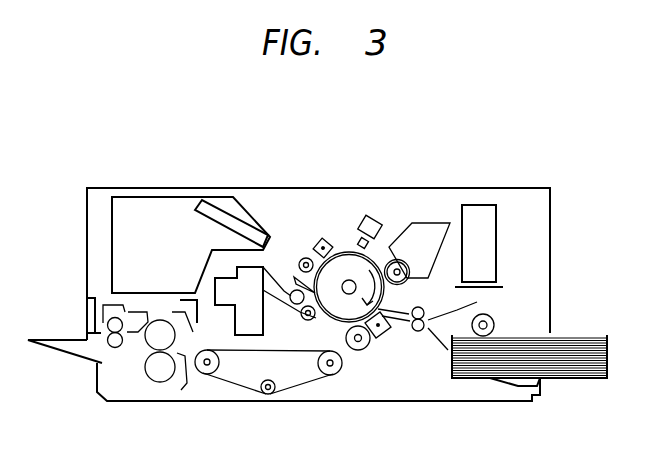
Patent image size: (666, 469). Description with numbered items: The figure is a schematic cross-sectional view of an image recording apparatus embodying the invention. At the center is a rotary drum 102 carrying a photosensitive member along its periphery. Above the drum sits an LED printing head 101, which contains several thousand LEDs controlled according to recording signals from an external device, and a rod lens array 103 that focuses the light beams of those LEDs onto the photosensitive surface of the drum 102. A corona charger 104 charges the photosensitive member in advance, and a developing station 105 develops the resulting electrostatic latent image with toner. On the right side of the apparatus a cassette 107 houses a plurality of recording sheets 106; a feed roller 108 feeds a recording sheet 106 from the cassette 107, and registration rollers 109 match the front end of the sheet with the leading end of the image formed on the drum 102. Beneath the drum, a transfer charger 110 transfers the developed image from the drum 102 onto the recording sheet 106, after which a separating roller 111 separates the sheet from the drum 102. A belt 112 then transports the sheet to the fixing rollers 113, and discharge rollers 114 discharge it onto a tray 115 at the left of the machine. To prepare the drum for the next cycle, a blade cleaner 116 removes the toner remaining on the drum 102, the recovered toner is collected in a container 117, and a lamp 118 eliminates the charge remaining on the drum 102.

The LED printing head 101 is at (372, 217).
The rotary drum 102 is at (348, 279).
The rod lens array 103 is at (386, 264).
The corona charger 104 is at (321, 239).
The developing station 105 is at (424, 232).
The recording sheet 106 is at (573, 357).
The cassette 107 is at (608, 348).
The feed roller 108 is at (495, 323).
The registration rollers 109 is at (418, 331).
The transfer charger 110 is at (383, 335).
The separating roller 111 is at (358, 351).
The belt 112 is at (295, 393).
The fixing rollers 113 is at (160, 382).
The discharge rollers 114 is at (116, 348).
The tray 115 is at (47, 348).
The blade cleaner 116 is at (296, 281).
The container 117 is at (243, 328).
The lamp 118 is at (303, 258).